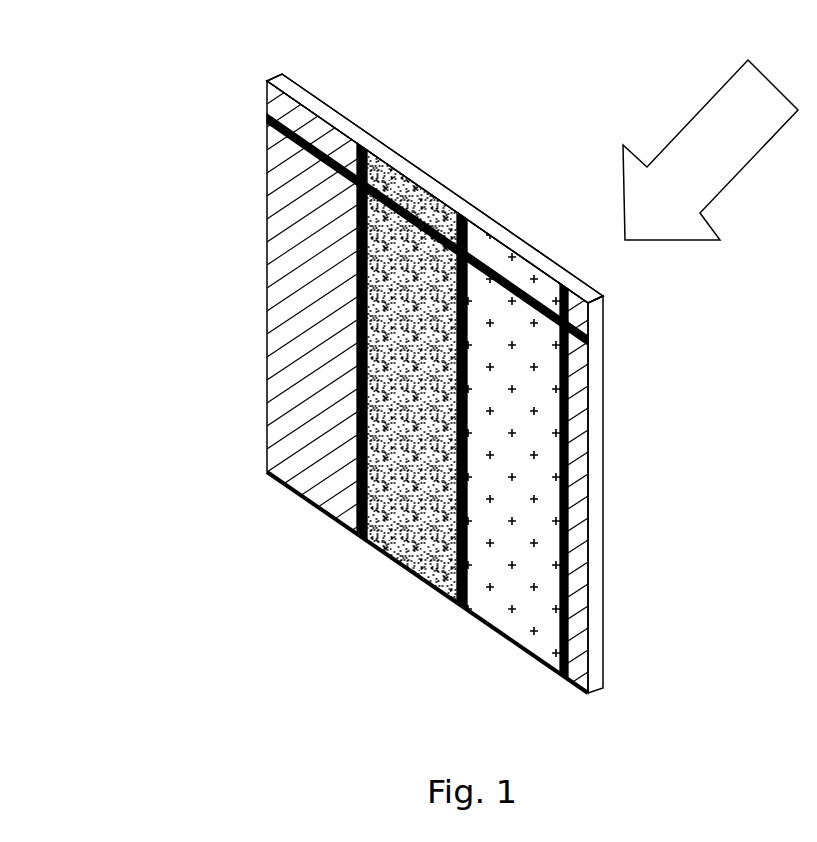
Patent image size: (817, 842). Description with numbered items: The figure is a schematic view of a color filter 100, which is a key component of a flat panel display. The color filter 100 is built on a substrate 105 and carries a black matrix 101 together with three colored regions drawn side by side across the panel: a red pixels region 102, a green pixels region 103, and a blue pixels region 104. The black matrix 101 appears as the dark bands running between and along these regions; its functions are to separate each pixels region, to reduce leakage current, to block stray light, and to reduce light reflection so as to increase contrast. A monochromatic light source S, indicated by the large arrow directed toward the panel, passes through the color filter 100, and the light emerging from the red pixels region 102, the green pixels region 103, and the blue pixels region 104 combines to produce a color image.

The color filter 100 is at (111, 56).
The black matrix 101 is at (267, 117).
The red pixels region 102 is at (297, 468).
The green pixels region 103 is at (412, 538).
The blue pixels region 104 is at (503, 597).
The substrate 105 is at (380, 148).
The monochromatic light source S is at (700, 118).